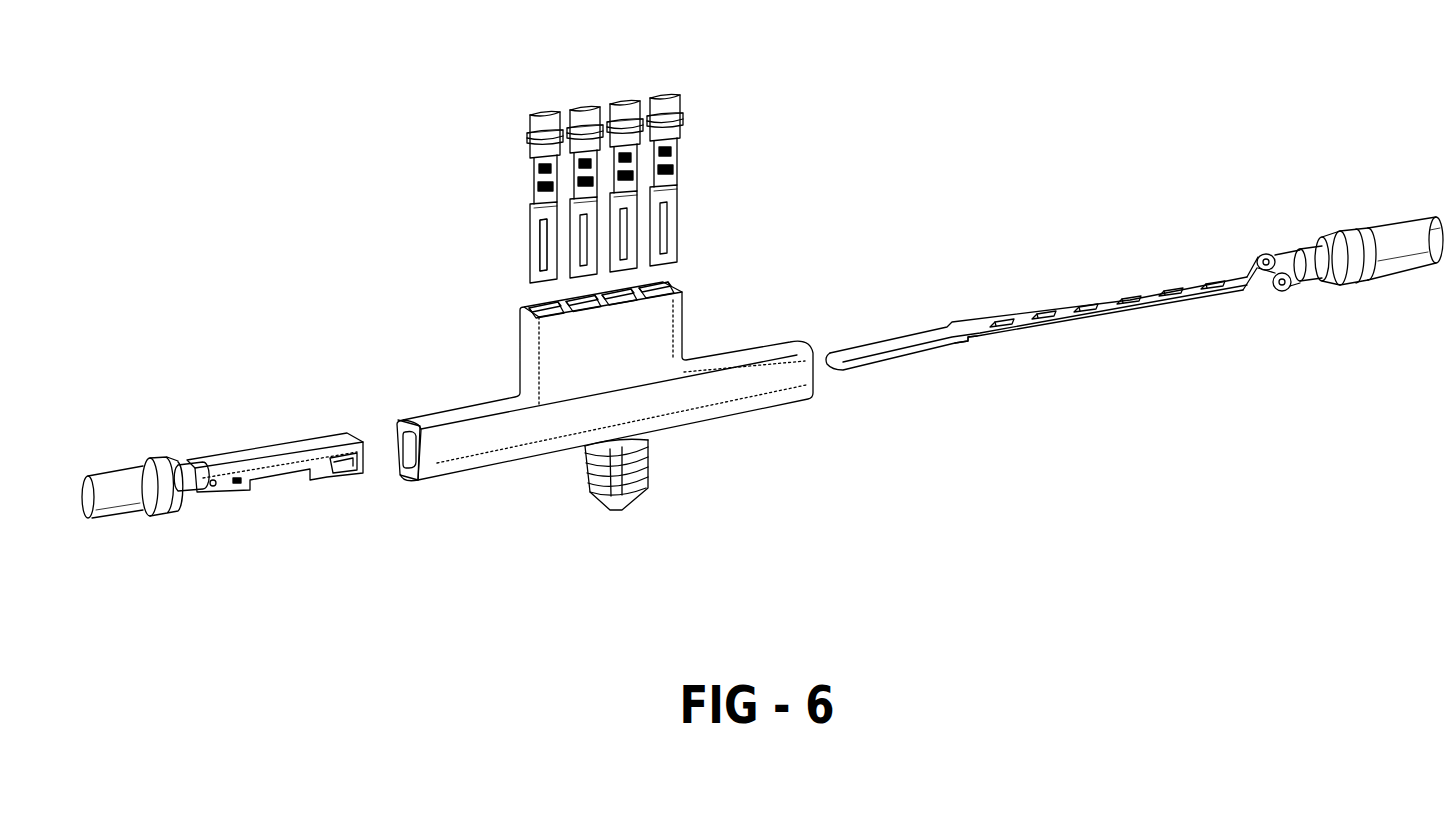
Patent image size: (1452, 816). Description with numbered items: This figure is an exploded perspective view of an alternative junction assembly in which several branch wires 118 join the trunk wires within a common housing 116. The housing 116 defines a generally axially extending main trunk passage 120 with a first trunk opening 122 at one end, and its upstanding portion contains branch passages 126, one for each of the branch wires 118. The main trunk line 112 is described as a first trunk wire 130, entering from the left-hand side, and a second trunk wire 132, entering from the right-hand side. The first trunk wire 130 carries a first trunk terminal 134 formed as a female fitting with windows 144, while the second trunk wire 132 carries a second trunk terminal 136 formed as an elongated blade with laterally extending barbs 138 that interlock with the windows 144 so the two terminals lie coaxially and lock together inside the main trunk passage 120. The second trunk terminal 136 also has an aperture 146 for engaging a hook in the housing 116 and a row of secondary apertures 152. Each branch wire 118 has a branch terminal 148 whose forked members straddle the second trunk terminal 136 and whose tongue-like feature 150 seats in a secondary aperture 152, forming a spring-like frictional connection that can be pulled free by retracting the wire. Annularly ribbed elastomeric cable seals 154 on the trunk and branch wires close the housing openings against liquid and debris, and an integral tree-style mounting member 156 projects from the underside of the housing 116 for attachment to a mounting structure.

The main trunk line 112 is at (1432, 214).
The housing 116 is at (768, 415).
The branch wires 118 is at (545, 126).
The main trunk passage 120 is at (403, 452).
The first trunk opening 122 is at (403, 446).
The branch passages 126 is at (538, 309).
The first trunk wire 130 is at (90, 478).
The second trunk wire 132 is at (1383, 278).
The first trunk terminal 134 is at (268, 452).
The second trunk terminal 136 is at (870, 347).
The barbs 138 is at (970, 344).
The windows 144 is at (347, 468).
The aperture 146 is at (1250, 278).
The branch terminals 148 is at (590, 222).
The tongue-like feature 150 is at (552, 234).
The secondary apertures 152 is at (1043, 316).
The cable seals 154 is at (528, 140).
The mounting member 156 is at (583, 481).